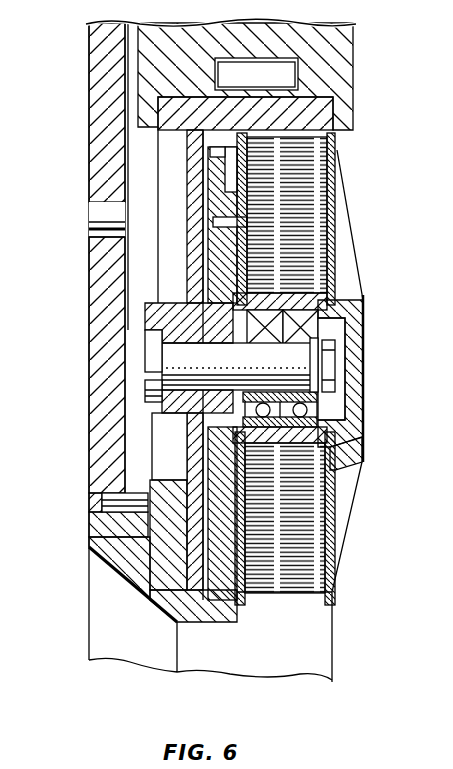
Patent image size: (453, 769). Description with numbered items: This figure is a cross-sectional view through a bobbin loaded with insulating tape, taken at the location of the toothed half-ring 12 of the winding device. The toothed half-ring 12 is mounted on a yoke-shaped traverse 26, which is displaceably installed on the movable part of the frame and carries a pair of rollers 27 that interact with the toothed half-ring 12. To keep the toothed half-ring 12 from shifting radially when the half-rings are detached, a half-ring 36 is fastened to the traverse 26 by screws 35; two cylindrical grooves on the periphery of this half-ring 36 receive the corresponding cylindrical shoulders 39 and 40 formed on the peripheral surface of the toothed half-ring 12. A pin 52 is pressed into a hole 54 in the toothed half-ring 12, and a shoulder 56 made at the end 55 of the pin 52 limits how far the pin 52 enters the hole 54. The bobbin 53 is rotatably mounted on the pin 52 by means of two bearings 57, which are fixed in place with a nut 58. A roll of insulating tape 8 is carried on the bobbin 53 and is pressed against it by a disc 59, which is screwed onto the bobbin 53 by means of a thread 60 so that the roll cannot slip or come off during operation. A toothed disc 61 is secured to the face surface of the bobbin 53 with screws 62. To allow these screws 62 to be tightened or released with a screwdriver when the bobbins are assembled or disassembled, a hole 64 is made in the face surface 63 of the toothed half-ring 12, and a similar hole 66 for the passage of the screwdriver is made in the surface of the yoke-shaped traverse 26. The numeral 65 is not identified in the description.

The insulating tape 8 is at (310, 592).
The toothed half-ring 12 is at (330, 110).
The yoke-shaped traverse 26 is at (93, 378).
The rollers 27 is at (347, 46).
The screws 35 is at (93, 512).
The half-ring 36 is at (117, 557).
The cylindrical shoulder 39 is at (115, 558).
The cylindrical shoulder 40 is at (180, 613).
The pin 52 is at (345, 352).
The bobbin 53 is at (355, 382).
The hole 54 is at (177, 347).
The end of the pin 55 is at (147, 386).
The shoulder 56 is at (147, 333).
The bearings 57 is at (310, 300).
The nut 58 is at (305, 398).
The disc 59 is at (333, 197).
The thread 60 is at (278, 313).
The toothed disc 61 is at (217, 272).
The screws 62 is at (310, 212).
The face surface 63 is at (190, 176).
The hole 64 is at (213, 222).
The side wall 65 is at (90, 192).
The hole 66 is at (90, 230).